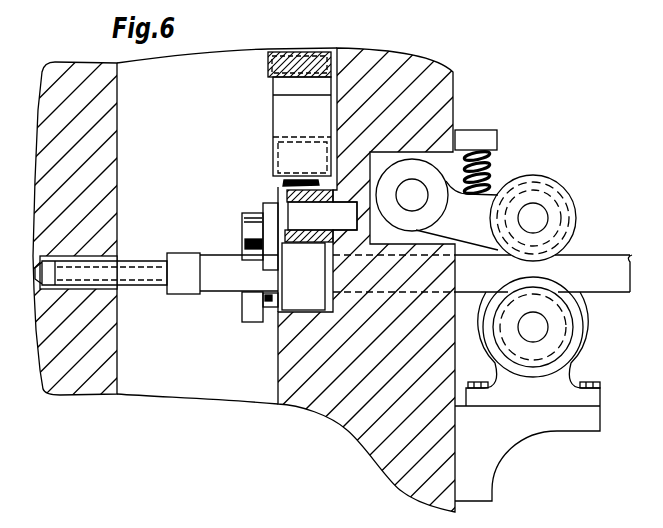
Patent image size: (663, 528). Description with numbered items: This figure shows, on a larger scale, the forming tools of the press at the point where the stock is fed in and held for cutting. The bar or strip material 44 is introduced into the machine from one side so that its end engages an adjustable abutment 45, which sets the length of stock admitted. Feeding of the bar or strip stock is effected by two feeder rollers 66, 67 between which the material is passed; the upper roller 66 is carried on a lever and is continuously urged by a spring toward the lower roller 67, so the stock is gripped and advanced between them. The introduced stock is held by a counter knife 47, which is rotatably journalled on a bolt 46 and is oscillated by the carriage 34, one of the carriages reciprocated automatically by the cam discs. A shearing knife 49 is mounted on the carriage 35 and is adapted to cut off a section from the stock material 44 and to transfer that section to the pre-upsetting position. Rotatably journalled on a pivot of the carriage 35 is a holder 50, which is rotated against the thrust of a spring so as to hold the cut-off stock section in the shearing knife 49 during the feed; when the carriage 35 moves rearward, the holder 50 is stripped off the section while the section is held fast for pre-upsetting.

The carriage 34 is at (287, 116).
The counter knife 47 is at (283, 183).
The bolt 46 is at (300, 213).
The holder 50 is at (265, 234).
The adjustable abutment 45 is at (183, 279).
The bar or strip material 44 is at (218, 279).
The carriage 35 is at (250, 298).
The shearing knife 49 is at (272, 306).
The feeder roller 66 is at (553, 184).
The feeder roller 67 is at (572, 338).